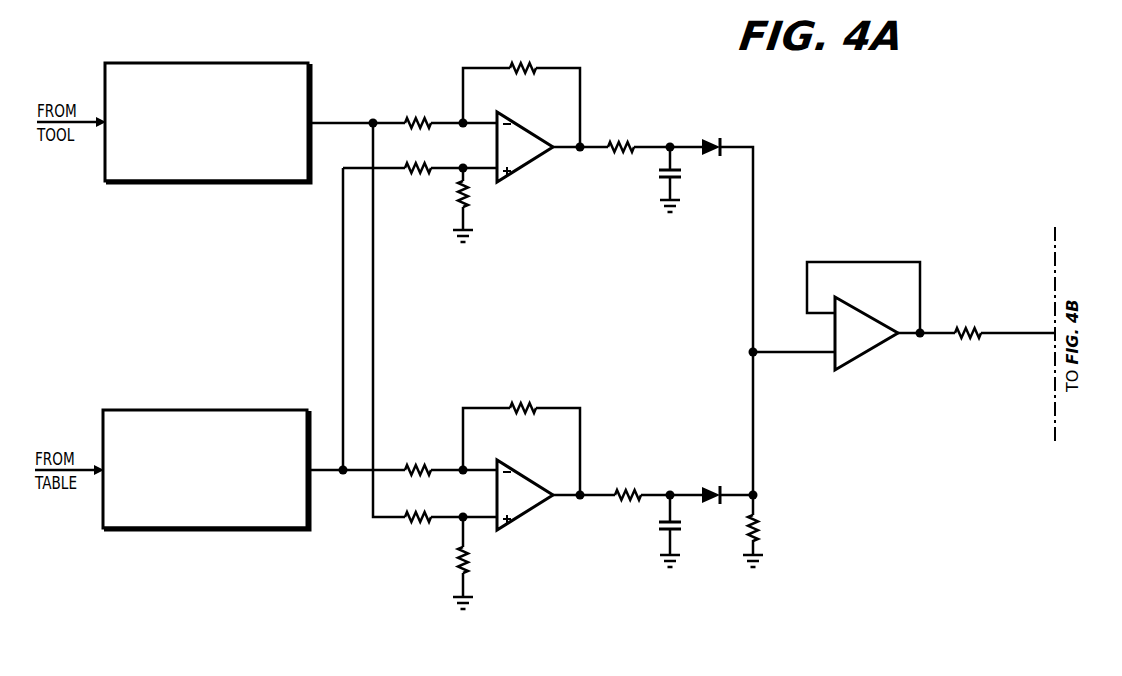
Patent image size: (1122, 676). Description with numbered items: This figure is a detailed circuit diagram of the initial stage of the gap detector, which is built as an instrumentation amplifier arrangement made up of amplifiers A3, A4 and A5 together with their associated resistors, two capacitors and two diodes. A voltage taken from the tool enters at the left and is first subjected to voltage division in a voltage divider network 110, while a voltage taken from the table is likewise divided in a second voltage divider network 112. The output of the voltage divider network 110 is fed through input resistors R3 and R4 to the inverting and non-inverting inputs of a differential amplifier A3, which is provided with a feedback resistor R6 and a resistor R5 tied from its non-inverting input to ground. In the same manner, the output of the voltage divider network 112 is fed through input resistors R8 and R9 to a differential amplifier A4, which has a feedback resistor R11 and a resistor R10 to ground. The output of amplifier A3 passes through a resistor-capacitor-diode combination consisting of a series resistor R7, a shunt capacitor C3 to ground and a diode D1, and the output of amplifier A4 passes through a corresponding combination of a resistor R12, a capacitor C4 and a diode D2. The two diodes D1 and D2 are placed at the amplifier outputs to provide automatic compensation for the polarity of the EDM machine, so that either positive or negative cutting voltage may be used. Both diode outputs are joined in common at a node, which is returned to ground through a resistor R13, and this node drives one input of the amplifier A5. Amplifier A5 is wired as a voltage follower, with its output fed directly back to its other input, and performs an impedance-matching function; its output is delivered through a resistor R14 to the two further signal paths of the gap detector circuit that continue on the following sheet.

The voltage divider network 110 is at (205, 70).
The voltage divider network 112 is at (212, 418).
The input resistor R3 is at (417, 112).
The input resistor R4 is at (417, 181).
The resistor R5 is at (475, 194).
The resistor R6 is at (523, 58).
The resistor R7 is at (621, 135).
The input resistor R8 is at (417, 459).
The input resistor R9 is at (417, 530).
The resistor R10 is at (480, 560).
The resistor R11 is at (524, 398).
The resistor R12 is at (627, 484).
The resistor R13 is at (770, 528).
The resistor R14 is at (970, 346).
The capacitor C3 is at (661, 176).
The capacitor C4 is at (661, 527).
The diode D1 is at (710, 137).
The diode D2 is at (712, 485).
The differential amplifier A3 is at (525, 147).
The differential amplifier A4 is at (525, 495).
The amplifier A5 is at (866, 333).